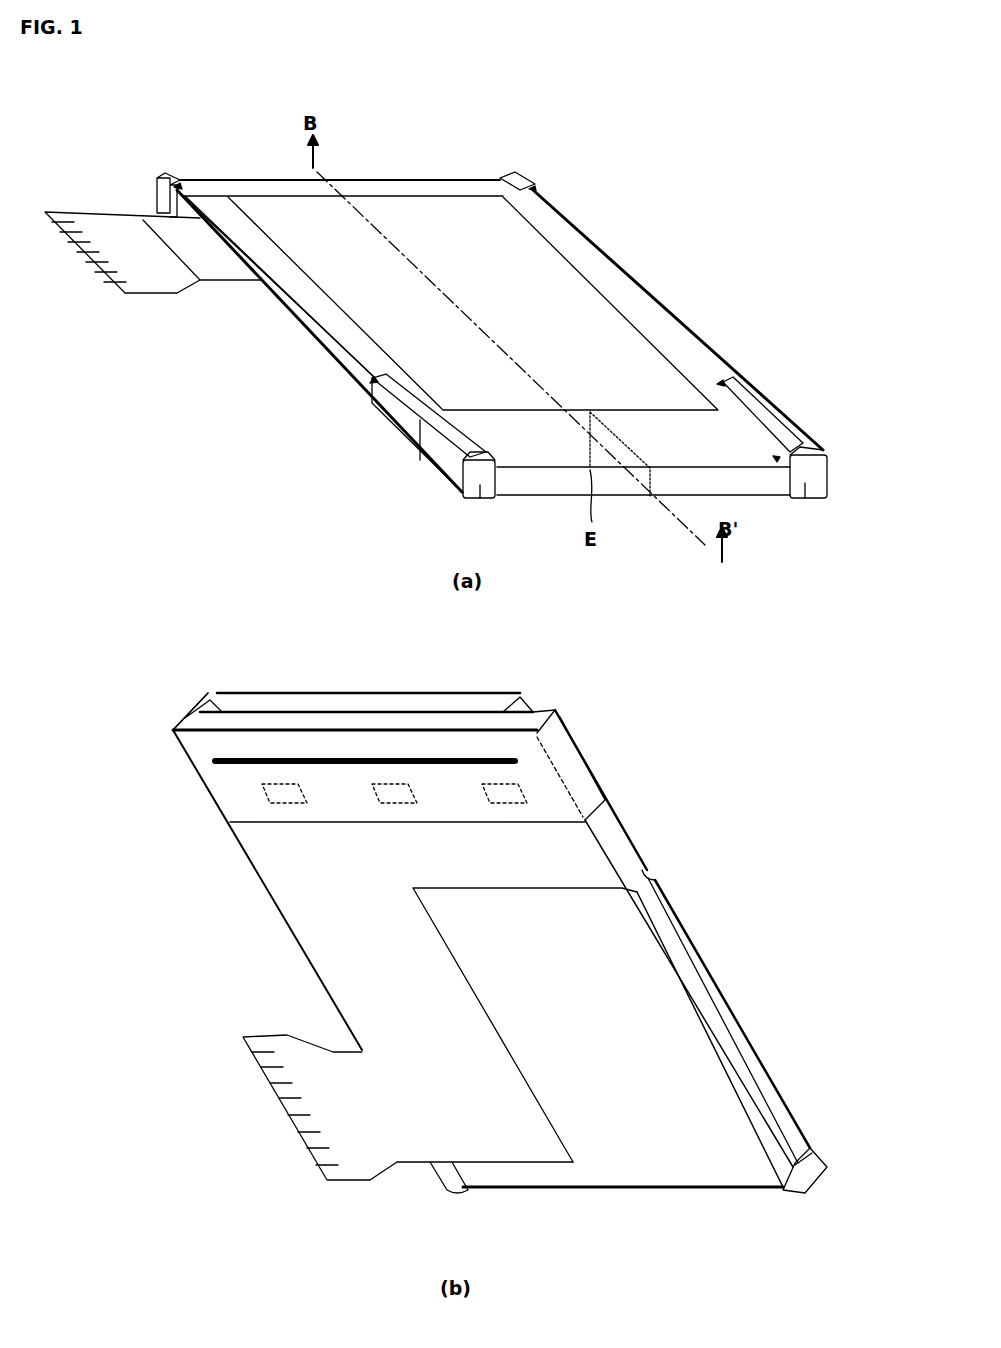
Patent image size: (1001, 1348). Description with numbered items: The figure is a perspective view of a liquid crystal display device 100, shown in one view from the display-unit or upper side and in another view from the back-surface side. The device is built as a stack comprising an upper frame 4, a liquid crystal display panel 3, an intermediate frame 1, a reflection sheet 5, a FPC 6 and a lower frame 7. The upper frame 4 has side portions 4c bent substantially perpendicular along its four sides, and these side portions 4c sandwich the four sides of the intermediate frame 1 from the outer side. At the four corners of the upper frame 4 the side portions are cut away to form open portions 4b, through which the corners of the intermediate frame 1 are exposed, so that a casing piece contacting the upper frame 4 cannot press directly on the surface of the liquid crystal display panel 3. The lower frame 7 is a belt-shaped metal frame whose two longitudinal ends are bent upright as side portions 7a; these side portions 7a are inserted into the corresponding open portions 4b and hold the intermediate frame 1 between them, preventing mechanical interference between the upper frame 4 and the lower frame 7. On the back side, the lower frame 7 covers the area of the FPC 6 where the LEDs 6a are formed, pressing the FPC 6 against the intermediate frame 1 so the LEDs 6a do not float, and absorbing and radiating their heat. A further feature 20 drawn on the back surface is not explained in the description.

The liquid crystal display device 100 is at (618, 110).
The intermediate frame 1 is at (165, 176).
The liquid crystal display panel 3 is at (465, 277).
The upper frame 4 is at (620, 272).
The open portions 4b is at (183, 182).
The side portions 4c is at (305, 318).
The reflection sheet 5 is at (655, 1130).
The FPC 6 is at (85, 210).
The LEDs 6a is at (285, 803).
The lower frame 7 is at (603, 782).
The side portions 7a is at (440, 452).
The slot 20 is at (265, 768).